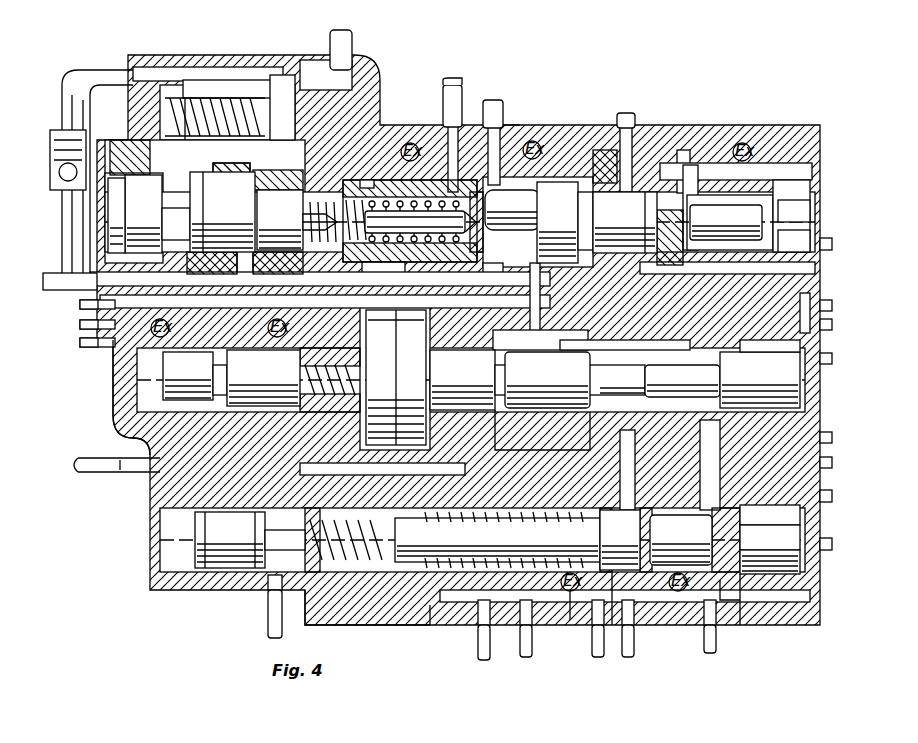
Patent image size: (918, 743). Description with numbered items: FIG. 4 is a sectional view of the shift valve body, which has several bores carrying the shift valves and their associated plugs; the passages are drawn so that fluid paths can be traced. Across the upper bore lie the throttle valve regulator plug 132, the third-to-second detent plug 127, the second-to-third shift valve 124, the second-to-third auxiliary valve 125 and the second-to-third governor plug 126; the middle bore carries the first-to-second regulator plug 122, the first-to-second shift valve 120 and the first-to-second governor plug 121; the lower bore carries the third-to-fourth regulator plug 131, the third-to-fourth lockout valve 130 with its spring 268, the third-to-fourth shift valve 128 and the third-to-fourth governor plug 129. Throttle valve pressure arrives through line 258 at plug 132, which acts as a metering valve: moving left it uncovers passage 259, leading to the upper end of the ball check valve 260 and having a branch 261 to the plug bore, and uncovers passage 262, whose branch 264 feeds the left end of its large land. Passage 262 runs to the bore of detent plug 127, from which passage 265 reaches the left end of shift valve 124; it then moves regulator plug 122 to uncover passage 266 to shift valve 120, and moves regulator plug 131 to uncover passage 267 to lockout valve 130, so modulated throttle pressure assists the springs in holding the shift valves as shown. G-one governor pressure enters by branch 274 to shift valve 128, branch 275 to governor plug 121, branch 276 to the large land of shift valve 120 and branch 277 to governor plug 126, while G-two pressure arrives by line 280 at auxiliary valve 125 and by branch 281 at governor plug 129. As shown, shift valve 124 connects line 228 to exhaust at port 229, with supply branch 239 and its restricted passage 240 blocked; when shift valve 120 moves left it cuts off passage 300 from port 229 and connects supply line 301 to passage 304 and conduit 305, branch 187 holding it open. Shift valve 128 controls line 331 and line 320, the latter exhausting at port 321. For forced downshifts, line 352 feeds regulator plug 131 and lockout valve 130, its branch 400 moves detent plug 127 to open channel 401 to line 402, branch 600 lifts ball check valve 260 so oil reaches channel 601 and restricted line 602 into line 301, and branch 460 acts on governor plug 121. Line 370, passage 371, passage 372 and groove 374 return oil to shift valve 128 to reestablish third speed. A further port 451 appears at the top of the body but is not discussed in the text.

The 1st to 2nd shift valve 120 is at (522, 405).
The 1st to 2nd governor plug 121 is at (732, 388).
The 1st to 2nd regulator plug 122 is at (165, 385).
The 2nd to 3rd shift valve 124 is at (552, 256).
The 2nd to 3rd auxiliary valve 125 is at (612, 205).
The 2nd to 3rd governor plug 126 is at (728, 215).
The 3rd to 2nd detent plug 127 is at (213, 185).
The 3rd to 4th shift valve 128 is at (620, 580).
The 3rd to 4th governor plug 129 is at (752, 575).
The 3rd to 4th lockout valve 130 is at (378, 600).
The 3rd to 4th regulator plug 131 is at (215, 570).
The throttle valve regulator plug 132 is at (285, 73).
The branch line 187 is at (630, 655).
The line 228 is at (497, 118).
The exhaust port 229 is at (520, 130).
The branch line 239 is at (462, 90).
The restricted passage 240 is at (443, 115).
The line 258 is at (345, 55).
The passage 259 is at (245, 80).
The ball check valve 260 is at (80, 128).
The branch 261 is at (190, 78).
The passage 262 is at (330, 178).
The branch 264 is at (222, 240).
The passage 265 is at (285, 222).
The passage 266 is at (345, 428).
The passage 267 is at (262, 572).
The spring 268 is at (452, 562).
The branch line 274 is at (815, 512).
The branch line 275 is at (818, 365).
The branch 276 is at (794, 242).
The branch 277 is at (805, 228).
The line 280 is at (815, 345).
The branch line 281 is at (775, 562).
The passage 300 is at (555, 400).
The line 301 is at (462, 395).
The passage 304 is at (625, 545).
The conduit 305 is at (598, 655).
The line 320 is at (530, 640).
The exhaust port 321 is at (570, 600).
The line 331 is at (488, 640).
The line 352 is at (272, 625).
The line 370 is at (805, 505).
The passage 371 is at (690, 548).
The passage 372 is at (722, 600).
The groove 374 is at (420, 605).
The branch line 400 is at (82, 303).
The channel 401 is at (135, 248).
The line 402 is at (100, 342).
The port 451 is at (630, 122).
The branch 460 is at (708, 655).
The branch 600 is at (140, 226).
The channel 601 is at (294, 248).
The restricted line 602 is at (85, 324).